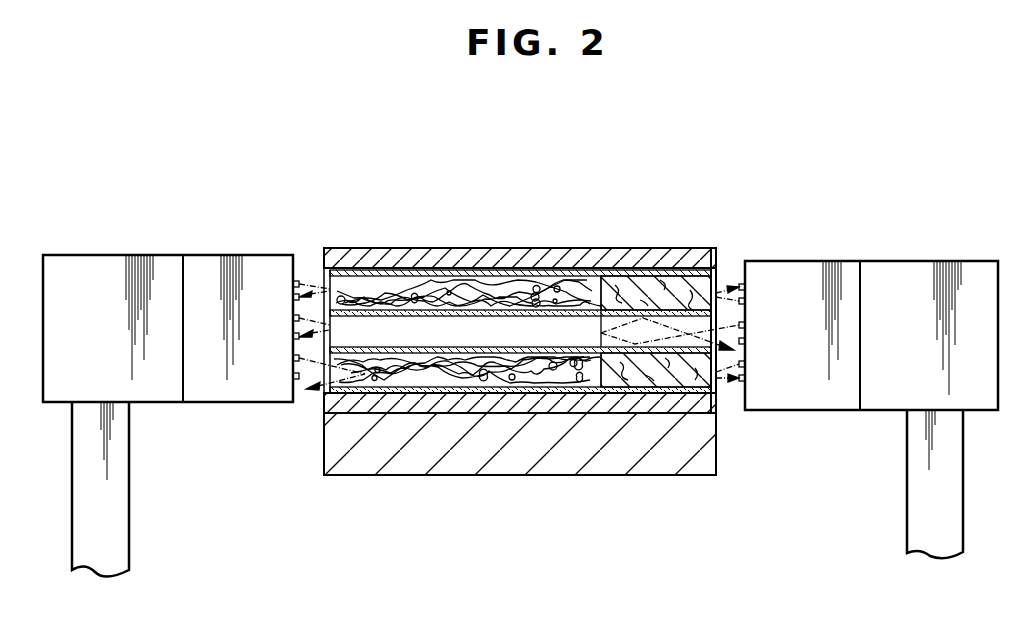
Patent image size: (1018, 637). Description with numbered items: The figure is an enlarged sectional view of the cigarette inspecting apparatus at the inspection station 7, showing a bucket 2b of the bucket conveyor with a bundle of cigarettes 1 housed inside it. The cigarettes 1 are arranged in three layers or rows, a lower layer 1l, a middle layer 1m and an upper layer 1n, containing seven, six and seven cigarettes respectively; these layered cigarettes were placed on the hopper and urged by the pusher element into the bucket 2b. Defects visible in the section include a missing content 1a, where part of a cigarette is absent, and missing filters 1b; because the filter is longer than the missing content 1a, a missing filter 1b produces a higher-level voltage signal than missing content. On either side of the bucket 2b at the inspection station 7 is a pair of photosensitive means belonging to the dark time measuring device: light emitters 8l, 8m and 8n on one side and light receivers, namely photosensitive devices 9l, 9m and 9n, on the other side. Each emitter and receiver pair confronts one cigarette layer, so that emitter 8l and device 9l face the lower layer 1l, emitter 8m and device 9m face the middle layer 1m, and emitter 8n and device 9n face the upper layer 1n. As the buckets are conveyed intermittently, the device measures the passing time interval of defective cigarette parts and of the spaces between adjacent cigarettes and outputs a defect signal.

The cigarettes 1 is at (392, 323).
The missing content 1a is at (444, 368).
The filters 1b is at (648, 285).
The lower layer of cigarettes 1l is at (480, 390).
The middle layer of cigarettes 1m is at (586, 327).
The upper layer of cigarettes 1n is at (550, 293).
The bucket 2b is at (487, 256).
The inspection station 7 is at (217, 268).
The light emitter 8n is at (296, 281).
The photosensitive device 9n is at (293, 297).
The light emitter 8m is at (293, 318).
The photosensitive device 9m is at (293, 336).
The light emitter 8l is at (293, 358).
The photosensitive device 9l is at (293, 377).